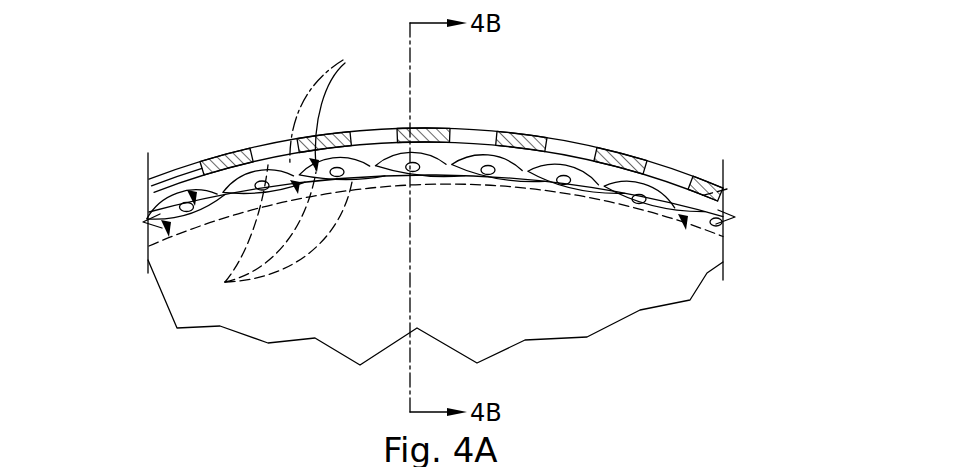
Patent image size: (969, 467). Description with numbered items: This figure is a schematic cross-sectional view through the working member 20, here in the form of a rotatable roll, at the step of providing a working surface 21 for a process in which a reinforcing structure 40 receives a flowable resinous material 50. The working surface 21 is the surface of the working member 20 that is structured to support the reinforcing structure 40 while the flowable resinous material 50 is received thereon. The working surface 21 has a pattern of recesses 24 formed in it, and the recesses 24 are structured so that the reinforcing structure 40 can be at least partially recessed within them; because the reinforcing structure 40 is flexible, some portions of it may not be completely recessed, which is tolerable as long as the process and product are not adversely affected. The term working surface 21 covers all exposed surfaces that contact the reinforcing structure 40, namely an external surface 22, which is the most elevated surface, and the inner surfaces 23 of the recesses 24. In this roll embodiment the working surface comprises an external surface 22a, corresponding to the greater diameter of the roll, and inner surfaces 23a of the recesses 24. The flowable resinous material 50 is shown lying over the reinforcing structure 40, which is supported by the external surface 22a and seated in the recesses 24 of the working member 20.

The working member 20 is at (511, 264).
The working surface 21 is at (334, 110).
The external surface 22 is at (150, 205).
The external surface 22a is at (657, 203).
The inner surfaces of the recesses 23 is at (149, 206).
The inner surfaces of the recesses 23a is at (727, 189).
The recesses 24 is at (227, 283).
The reinforcing structure 40 is at (267, 146).
The flowable resinous material 50 is at (450, 152).